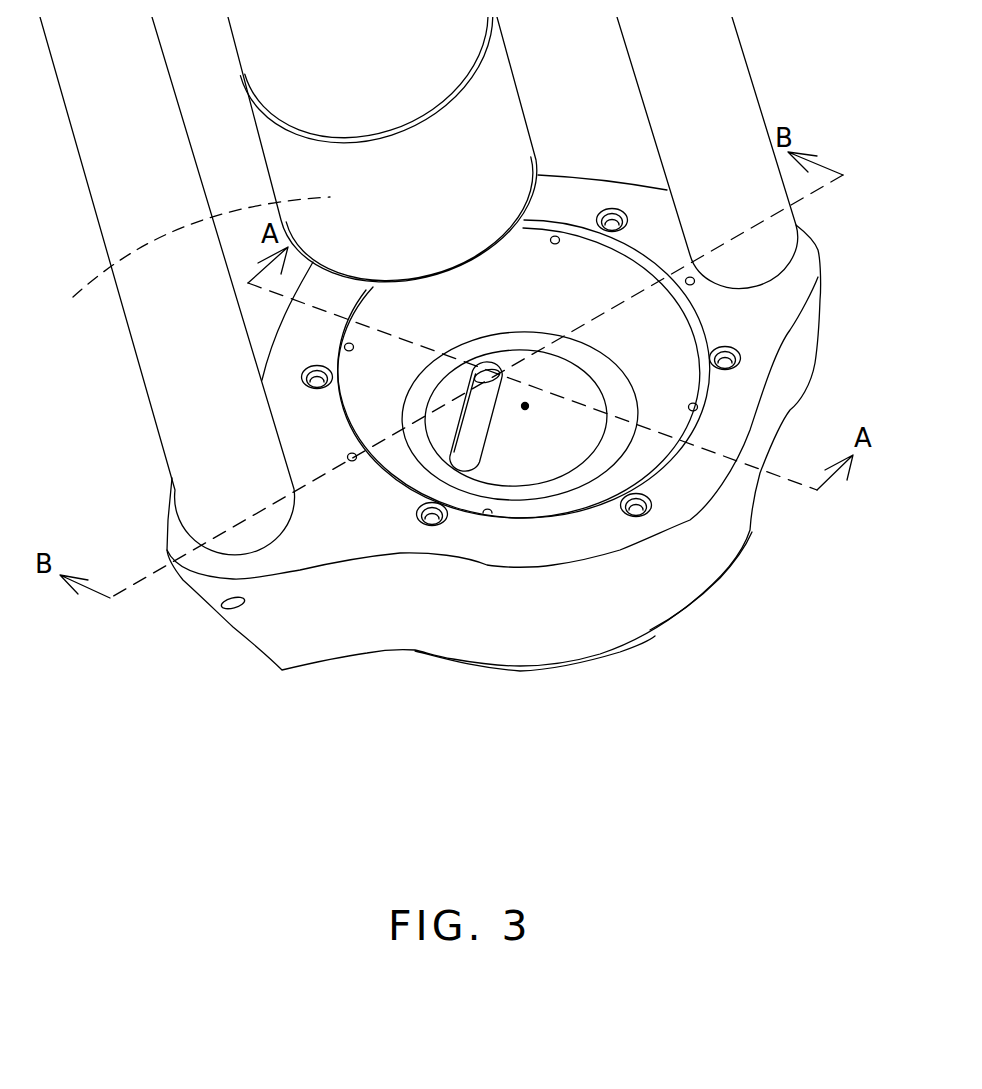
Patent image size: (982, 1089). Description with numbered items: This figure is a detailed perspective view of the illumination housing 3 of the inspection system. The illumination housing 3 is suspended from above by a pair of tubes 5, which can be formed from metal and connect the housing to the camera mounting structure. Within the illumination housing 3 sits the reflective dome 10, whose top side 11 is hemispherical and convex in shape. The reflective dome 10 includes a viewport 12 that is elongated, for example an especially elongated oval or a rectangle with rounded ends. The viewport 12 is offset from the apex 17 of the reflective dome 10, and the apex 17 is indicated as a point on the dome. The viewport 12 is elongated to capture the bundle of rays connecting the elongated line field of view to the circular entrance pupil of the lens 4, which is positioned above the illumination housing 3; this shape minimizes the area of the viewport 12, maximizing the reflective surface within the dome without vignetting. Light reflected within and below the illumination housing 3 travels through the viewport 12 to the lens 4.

The illumination housing 3 is at (826, 372).
The lens 4 is at (186, 260).
The tubes 5 is at (163, 372).
The reflective dome 10 is at (590, 445).
The top side 11 is at (545, 443).
The viewport 12 is at (483, 437).
The apex 17 is at (526, 405).